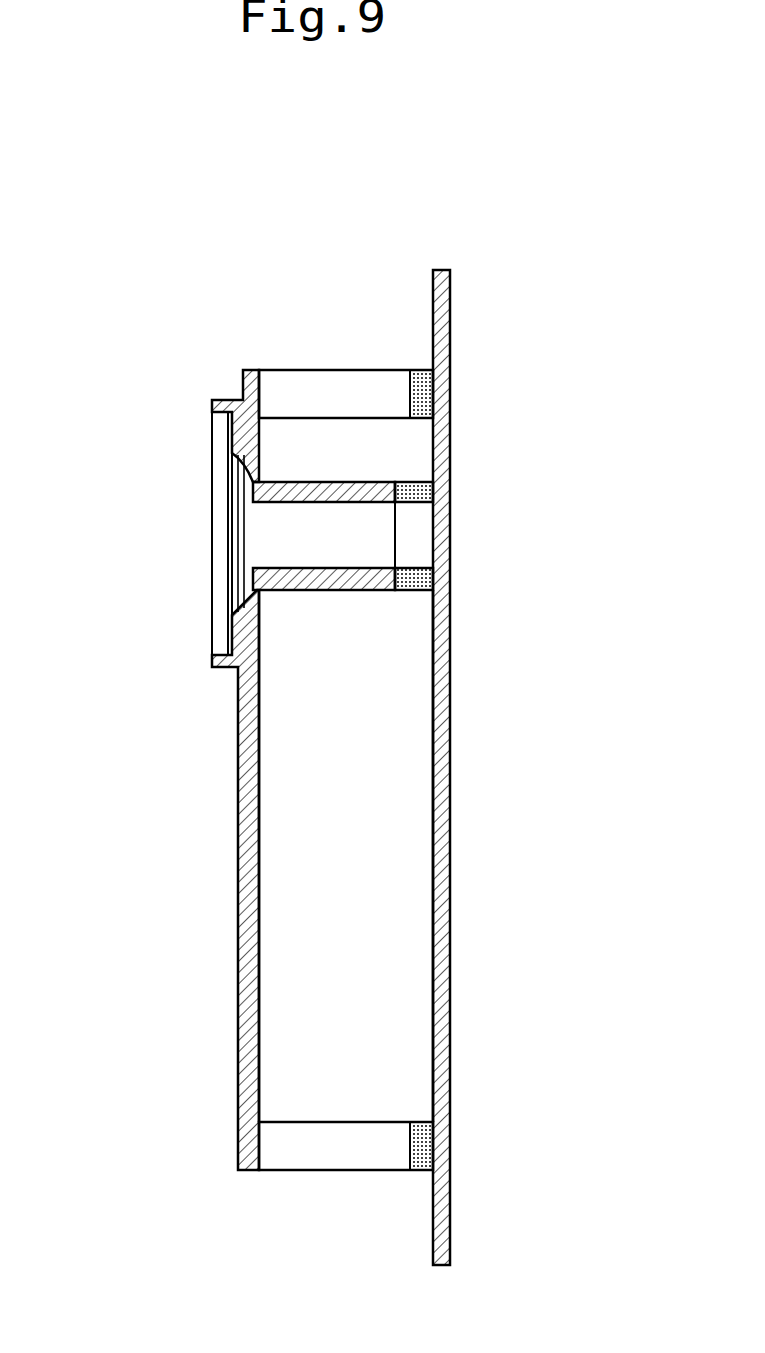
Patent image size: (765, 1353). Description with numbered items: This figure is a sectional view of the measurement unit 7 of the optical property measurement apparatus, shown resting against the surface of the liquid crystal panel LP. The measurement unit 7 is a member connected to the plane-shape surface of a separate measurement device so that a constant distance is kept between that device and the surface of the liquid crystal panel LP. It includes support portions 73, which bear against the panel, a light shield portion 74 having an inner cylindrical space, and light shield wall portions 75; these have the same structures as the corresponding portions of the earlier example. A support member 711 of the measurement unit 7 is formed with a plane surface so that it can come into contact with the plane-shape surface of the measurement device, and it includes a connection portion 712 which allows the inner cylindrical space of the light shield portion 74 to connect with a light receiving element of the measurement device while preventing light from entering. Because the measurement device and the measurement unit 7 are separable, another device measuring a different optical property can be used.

The measurement unit 7 is at (174, 300).
The support member 711 is at (240, 785).
The connection portion 712 is at (220, 538).
The support portion 73 is at (317, 385).
The light shield portion 74 is at (347, 590).
The light shield wall portion 75 is at (392, 985).
The liquid crystal panel LP is at (450, 858).